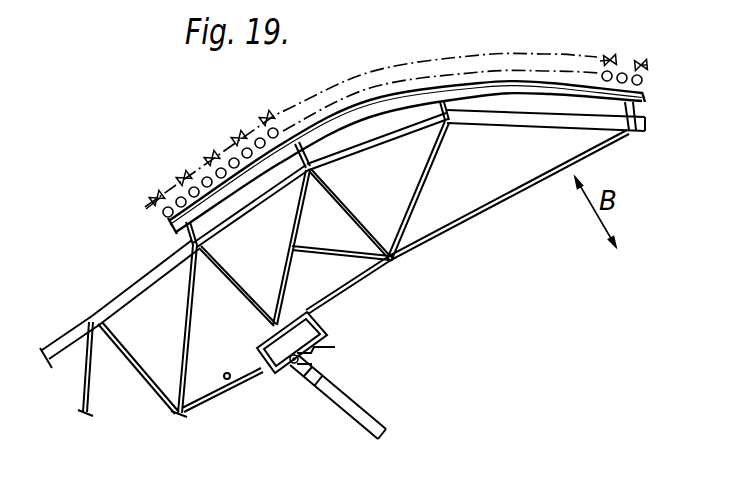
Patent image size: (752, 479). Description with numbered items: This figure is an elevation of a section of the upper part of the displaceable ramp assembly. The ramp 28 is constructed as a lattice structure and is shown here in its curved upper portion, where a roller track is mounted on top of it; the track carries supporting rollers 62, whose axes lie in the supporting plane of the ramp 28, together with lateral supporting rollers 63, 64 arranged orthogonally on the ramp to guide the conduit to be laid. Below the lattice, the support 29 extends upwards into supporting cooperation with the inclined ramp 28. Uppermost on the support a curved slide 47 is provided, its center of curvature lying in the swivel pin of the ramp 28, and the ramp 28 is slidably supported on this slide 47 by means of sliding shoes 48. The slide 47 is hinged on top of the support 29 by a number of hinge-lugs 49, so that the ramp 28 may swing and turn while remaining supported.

The ramp 28 is at (122, 296).
The support 29 is at (348, 398).
The curved slide 47 is at (336, 348).
The sliding shoes 48 is at (283, 382).
The hinge-lugs 49 is at (293, 380).
The supporting rollers 62 is at (163, 211).
The lateral supporting roller 63 is at (178, 176).
The lateral supporting roller 64 is at (396, 131).